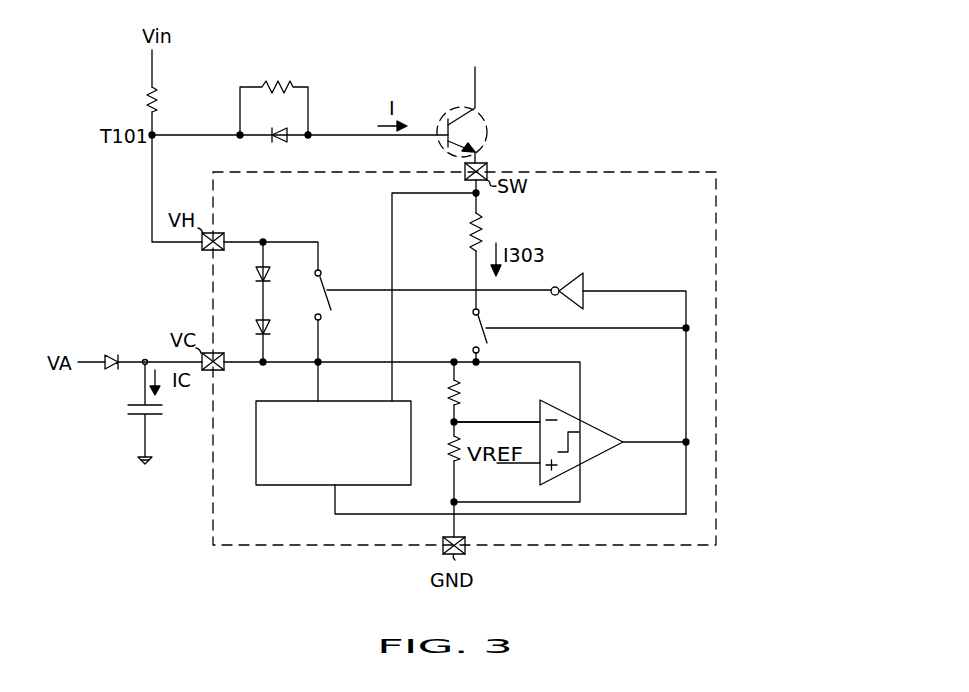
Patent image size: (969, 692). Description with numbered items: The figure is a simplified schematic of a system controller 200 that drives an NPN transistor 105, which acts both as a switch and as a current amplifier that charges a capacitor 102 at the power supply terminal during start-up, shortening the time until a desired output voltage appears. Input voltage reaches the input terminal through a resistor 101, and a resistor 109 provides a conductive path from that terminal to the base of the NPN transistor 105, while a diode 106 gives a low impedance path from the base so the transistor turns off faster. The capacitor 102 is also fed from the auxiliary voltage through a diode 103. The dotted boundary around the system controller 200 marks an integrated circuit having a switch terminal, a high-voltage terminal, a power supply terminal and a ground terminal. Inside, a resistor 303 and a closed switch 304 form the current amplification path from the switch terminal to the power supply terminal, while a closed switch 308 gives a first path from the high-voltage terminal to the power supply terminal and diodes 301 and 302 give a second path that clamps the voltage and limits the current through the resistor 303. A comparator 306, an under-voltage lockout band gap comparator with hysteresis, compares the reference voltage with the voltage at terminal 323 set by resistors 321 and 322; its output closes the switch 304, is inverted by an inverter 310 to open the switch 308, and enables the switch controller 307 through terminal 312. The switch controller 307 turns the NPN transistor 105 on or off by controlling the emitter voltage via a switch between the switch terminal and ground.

The resistor 101 is at (157, 107).
The capacitor 102 is at (132, 414).
The diode 103 is at (109, 359).
The NPN transistor 105 is at (489, 117).
The diode 106 is at (282, 140).
The resistor 109 is at (274, 96).
The system controller 200 is at (686, 172).
The diode 301 is at (268, 272).
The diode 302 is at (268, 325).
The resistor 303 is at (481, 214).
The switch 304 is at (480, 333).
The comparator 306 is at (591, 426).
The switch controller 307 is at (352, 478).
The switch 308 is at (322, 281).
The inverter 310 is at (590, 268).
The terminal 312 is at (368, 516).
The resistor 321 is at (436, 392).
The resistor 322 is at (448, 440).
The terminal 323 is at (500, 417).